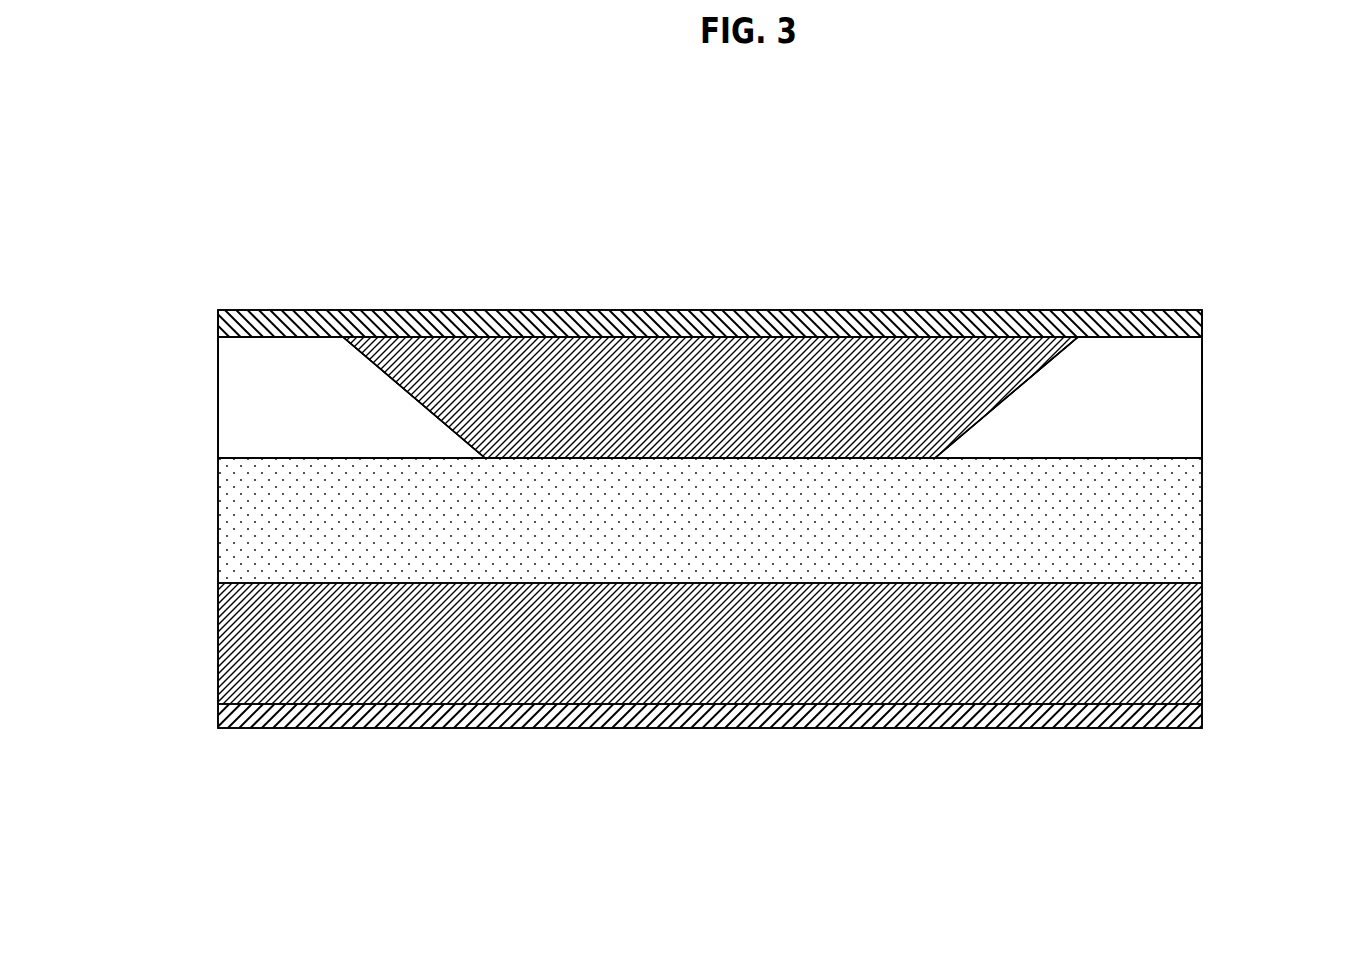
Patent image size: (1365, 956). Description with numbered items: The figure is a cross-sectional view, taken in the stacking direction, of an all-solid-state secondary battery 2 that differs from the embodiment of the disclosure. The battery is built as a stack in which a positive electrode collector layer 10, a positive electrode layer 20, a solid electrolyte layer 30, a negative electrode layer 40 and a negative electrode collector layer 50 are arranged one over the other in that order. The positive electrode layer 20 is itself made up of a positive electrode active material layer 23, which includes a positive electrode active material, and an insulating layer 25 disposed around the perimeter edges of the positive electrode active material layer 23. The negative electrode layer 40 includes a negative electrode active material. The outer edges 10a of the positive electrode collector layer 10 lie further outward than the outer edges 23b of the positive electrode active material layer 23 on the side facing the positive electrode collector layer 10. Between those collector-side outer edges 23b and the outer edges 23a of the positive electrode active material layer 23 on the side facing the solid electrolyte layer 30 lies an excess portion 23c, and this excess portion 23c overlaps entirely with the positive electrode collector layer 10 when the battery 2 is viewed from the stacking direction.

The all-solid-state secondary battery 2 is at (750, 246).
The positive electrode collector layer 10 is at (820, 311).
The outer edges of the positive electrode collector layer 10a is at (218, 320).
The positive electrode layer 20 is at (1276, 366).
The positive electrode active material layer 23 is at (1027, 358).
The outer edges of the positive electrode active material layer on the solid electro 23a is at (485, 458).
The outer edges of the positive electrode active material layer on the positive elec 23b is at (343, 338).
The excess portion 23c is at (488, 458).
The insulating layer 25 is at (1170, 403).
The solid electrolyte layer 30 is at (1175, 570).
The negative electrode layer 40 is at (1175, 652).
The negative electrode collector layer 50 is at (1180, 718).